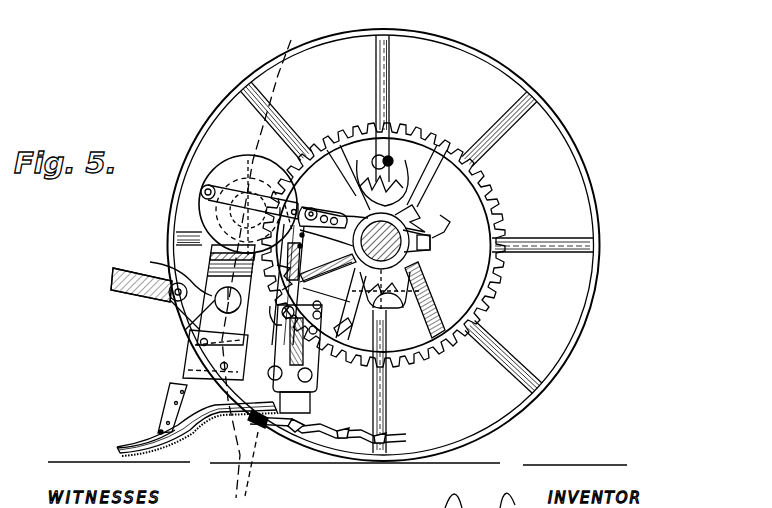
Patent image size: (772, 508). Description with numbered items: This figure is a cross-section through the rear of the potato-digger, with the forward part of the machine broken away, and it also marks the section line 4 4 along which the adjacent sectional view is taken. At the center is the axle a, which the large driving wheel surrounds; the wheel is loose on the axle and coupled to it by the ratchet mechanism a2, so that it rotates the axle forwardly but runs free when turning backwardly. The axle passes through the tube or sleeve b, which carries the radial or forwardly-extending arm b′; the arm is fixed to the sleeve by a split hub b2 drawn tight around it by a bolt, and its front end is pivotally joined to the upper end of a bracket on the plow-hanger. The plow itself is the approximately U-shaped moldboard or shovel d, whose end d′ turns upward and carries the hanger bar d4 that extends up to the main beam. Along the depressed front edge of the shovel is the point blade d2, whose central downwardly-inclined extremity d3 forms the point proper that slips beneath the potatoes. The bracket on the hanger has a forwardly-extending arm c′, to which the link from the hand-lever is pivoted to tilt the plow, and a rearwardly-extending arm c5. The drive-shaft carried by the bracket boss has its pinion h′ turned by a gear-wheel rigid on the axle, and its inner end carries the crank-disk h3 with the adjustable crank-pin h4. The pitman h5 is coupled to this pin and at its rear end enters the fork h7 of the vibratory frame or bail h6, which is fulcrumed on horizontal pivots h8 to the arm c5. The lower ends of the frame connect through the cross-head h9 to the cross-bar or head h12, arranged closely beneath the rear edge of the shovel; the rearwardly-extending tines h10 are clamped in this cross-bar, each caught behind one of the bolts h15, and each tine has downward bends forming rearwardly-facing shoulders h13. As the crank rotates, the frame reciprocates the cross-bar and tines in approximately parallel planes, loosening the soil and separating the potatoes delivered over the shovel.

The section line 4 4 is at (274, 36).
The axle a is at (383, 245).
The ratchet mechanism a2 is at (428, 218).
The tube or sleeve b is at (365, 238).
The radial arm b′ is at (322, 203).
The split hub b2 is at (407, 220).
The forwardly-extending arm c′ is at (202, 295).
The rearwardly-extending arm c5 is at (316, 278).
The moldboard or shovel d is at (197, 429).
The upturned end of moldboard d′ is at (193, 365).
The point blade d2 is at (161, 418).
The central projection or point d3 is at (127, 443).
The hanger bar d4 is at (280, 403).
The pinion h′ is at (307, 362).
The crank-disk h3 is at (264, 166).
The crank-pin h4 is at (212, 195).
The pitman h5 is at (204, 180).
The vibratory frame or bail h6 is at (337, 337).
The fork h7 is at (293, 173).
The fulcrum pivot h8 is at (283, 325).
The cross-head h9 is at (290, 388).
The tine or finger h10 is at (337, 472).
The cross-bar or head h12 is at (245, 432).
The rearwardly-facing shoulder h13 is at (303, 434).
The bolt h15 is at (255, 416).